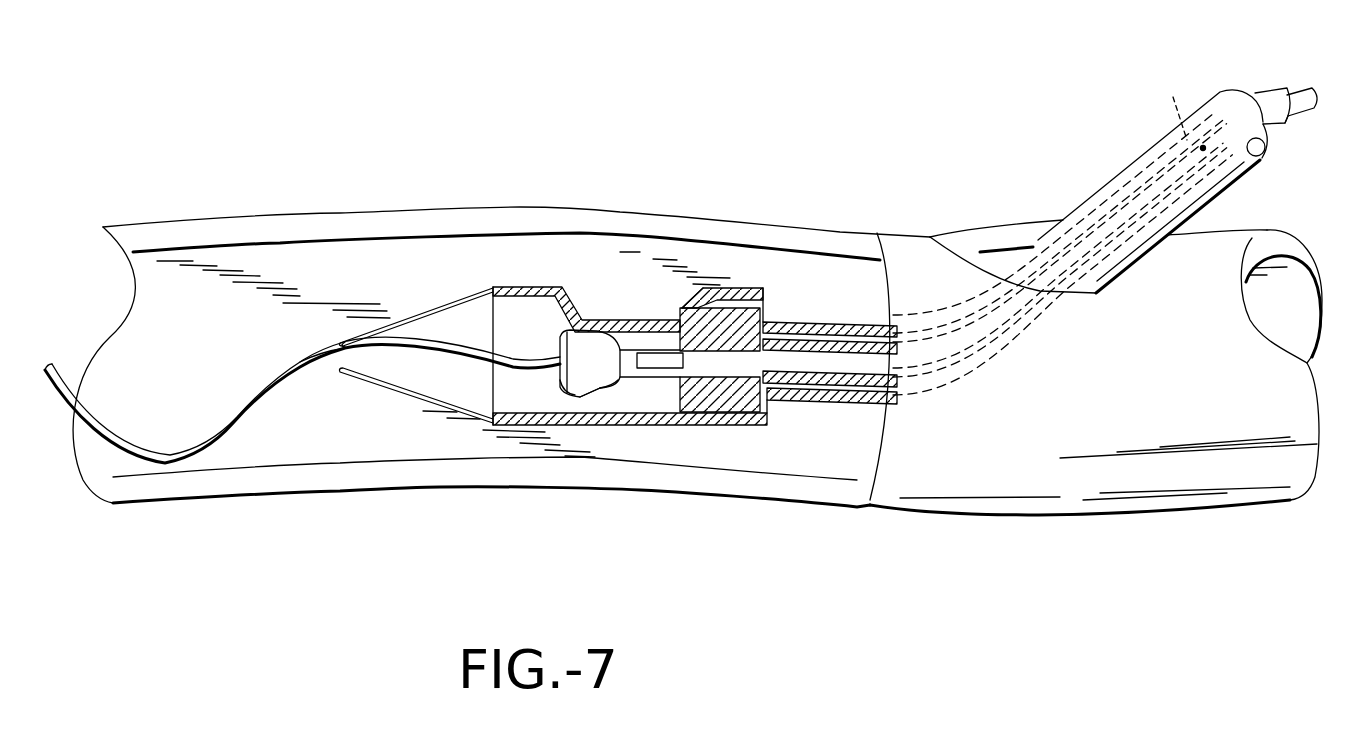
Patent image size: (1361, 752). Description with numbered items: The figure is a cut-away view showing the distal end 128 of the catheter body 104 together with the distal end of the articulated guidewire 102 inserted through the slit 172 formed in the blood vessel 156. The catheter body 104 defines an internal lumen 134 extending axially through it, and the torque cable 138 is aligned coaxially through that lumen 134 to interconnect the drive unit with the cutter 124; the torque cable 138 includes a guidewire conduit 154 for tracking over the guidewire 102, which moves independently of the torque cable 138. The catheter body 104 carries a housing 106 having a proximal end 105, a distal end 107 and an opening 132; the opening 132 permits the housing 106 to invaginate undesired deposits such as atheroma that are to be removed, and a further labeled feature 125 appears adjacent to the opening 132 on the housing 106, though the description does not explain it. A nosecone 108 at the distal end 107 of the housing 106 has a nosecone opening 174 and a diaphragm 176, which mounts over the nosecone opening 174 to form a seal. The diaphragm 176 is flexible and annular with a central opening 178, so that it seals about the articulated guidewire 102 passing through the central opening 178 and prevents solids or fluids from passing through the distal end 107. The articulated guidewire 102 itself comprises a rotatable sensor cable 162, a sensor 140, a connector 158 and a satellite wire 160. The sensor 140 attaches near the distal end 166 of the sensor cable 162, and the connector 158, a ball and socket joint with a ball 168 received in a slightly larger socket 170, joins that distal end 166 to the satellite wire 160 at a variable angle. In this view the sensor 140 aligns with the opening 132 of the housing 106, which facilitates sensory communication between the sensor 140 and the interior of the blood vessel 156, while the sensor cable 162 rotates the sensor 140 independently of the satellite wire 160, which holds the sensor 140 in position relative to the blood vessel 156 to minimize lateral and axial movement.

The articulated guidewire 102 is at (1183, 112).
The catheter body 104 is at (1203, 202).
The proximal end of housing 105 is at (750, 427).
The housing 106 is at (763, 287).
The distal end of housing 107 is at (497, 287).
The nosecone 108 is at (413, 312).
The cutter 124 is at (720, 413).
The step 125 is at (690, 306).
The distal end of catheter body 128 is at (1093, 187).
The opening 132 is at (703, 289).
The internal lumen 134 is at (1267, 147).
The torque cable 138 is at (1280, 92).
The sensor 140 is at (647, 350).
The guidewire conduit 154 is at (1293, 125).
The blood vessel 156 is at (1157, 404).
The connector 158 is at (587, 340).
The satellite wire 160 is at (233, 433).
The sensor cable 162 is at (1313, 100).
The distal end of sensor cable 166 is at (610, 387).
The ball 168 is at (552, 388).
The socket 170 is at (583, 396).
The slit 172 is at (990, 237).
The nosecone opening 174 is at (342, 344).
The diaphragm 176 is at (338, 346).
The central opening 178 is at (345, 362).